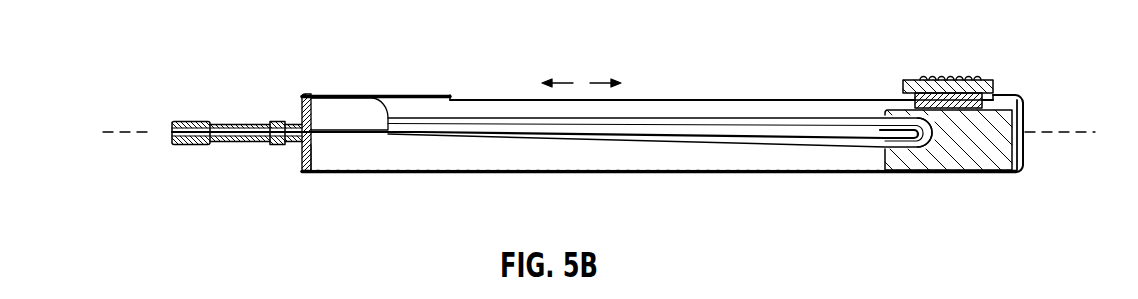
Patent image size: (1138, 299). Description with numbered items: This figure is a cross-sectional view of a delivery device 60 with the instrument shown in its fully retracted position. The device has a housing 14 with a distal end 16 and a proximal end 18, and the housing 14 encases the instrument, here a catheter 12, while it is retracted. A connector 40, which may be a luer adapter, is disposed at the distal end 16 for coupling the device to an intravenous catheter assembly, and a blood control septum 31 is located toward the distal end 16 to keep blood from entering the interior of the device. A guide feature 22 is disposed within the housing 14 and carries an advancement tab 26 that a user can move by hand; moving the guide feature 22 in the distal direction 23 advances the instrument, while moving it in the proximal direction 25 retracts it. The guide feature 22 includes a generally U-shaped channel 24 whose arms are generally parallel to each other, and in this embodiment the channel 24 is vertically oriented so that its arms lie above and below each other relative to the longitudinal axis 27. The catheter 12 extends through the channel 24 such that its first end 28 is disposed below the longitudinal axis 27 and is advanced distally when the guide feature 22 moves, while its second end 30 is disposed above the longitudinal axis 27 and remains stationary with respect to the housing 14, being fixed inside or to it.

The catheter 12 is at (774, 118).
The housing 14 is at (817, 173).
The distal end 16 is at (310, 85).
The proximal end 18 is at (1028, 86).
The guide feature 22 is at (1007, 142).
The distal direction 23 is at (563, 82).
The channel 24 is at (895, 107).
The proximal direction 25 is at (603, 82).
The advancement tab 26 is at (953, 82).
The longitudinal axis 27 is at (152, 130).
The first end 28 is at (185, 122).
The second end 30 is at (378, 104).
The blood control septum 31 is at (311, 145).
The connector 40 is at (240, 122).
The delivery device 60 is at (688, 60).